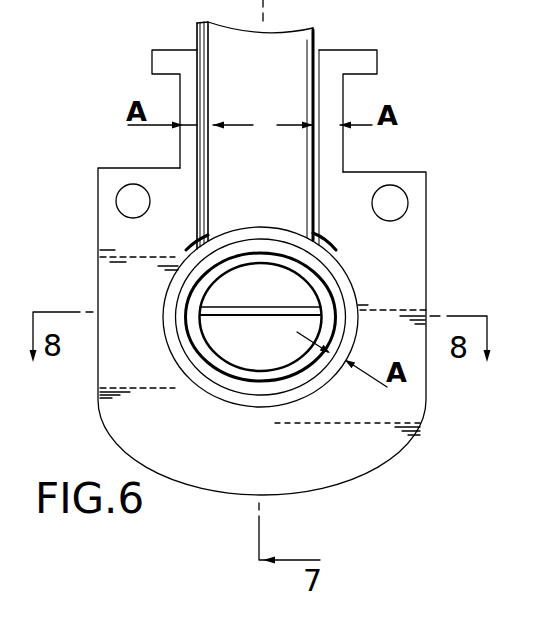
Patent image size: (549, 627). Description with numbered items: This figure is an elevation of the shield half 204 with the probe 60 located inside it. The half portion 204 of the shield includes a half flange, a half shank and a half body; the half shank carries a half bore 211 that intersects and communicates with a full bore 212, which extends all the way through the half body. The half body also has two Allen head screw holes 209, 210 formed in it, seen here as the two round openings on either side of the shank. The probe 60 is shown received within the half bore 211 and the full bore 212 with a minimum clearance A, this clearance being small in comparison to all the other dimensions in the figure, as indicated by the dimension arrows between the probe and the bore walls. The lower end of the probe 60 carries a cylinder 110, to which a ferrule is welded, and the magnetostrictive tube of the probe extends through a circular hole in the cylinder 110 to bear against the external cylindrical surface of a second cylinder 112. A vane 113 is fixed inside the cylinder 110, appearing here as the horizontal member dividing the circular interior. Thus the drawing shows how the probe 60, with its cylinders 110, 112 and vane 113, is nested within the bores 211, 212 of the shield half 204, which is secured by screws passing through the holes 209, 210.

The probe 60 is at (324, 33).
The half bore 211 is at (331, 80).
The half portion of shield 204 is at (378, 165).
The Allen head screw hole 209 is at (123, 197).
The Allen head screw hole 210 is at (400, 198).
The full bore 212 is at (178, 363).
The cylinder 110 is at (300, 388).
The cylinder 112 is at (218, 353).
The vane 113 is at (245, 307).